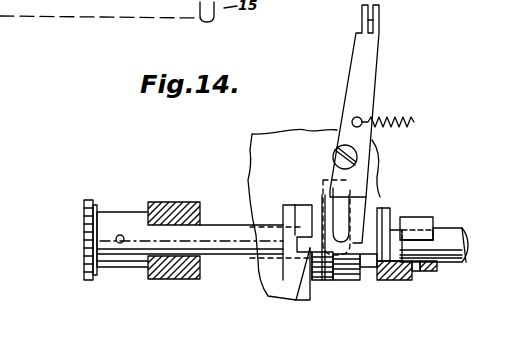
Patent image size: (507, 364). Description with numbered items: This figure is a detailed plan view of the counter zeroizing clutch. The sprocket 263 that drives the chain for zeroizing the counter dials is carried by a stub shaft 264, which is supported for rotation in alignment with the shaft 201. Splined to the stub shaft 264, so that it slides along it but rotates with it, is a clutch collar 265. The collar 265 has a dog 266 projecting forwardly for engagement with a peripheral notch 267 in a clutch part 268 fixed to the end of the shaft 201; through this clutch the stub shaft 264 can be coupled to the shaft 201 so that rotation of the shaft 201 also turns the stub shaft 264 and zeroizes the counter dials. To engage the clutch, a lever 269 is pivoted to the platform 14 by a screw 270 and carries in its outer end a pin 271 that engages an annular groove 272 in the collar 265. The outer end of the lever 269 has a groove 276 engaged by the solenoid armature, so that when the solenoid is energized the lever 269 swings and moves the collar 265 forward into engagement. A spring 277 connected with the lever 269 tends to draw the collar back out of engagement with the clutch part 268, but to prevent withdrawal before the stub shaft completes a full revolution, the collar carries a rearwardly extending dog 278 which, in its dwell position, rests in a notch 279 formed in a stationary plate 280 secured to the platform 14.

The platform 14 is at (314, 130).
The shaft 201 is at (452, 233).
The sprocket 263 is at (96, 200).
The stub shaft 264 is at (222, 246).
The clutch collar 265 is at (318, 282).
The dog 266 is at (373, 240).
The peripheral notch 267 is at (390, 222).
The clutch part 268 is at (402, 280).
The lever 269 is at (352, 70).
The screw 270 is at (357, 161).
The pin 271 is at (327, 197).
The annular groove 272 is at (352, 282).
The groove 276 is at (372, 19).
The spring 277 is at (408, 122).
The rearwardly extending dog 278 is at (308, 249).
The notch 279 is at (285, 228).
The stationary plate 280 is at (300, 207).